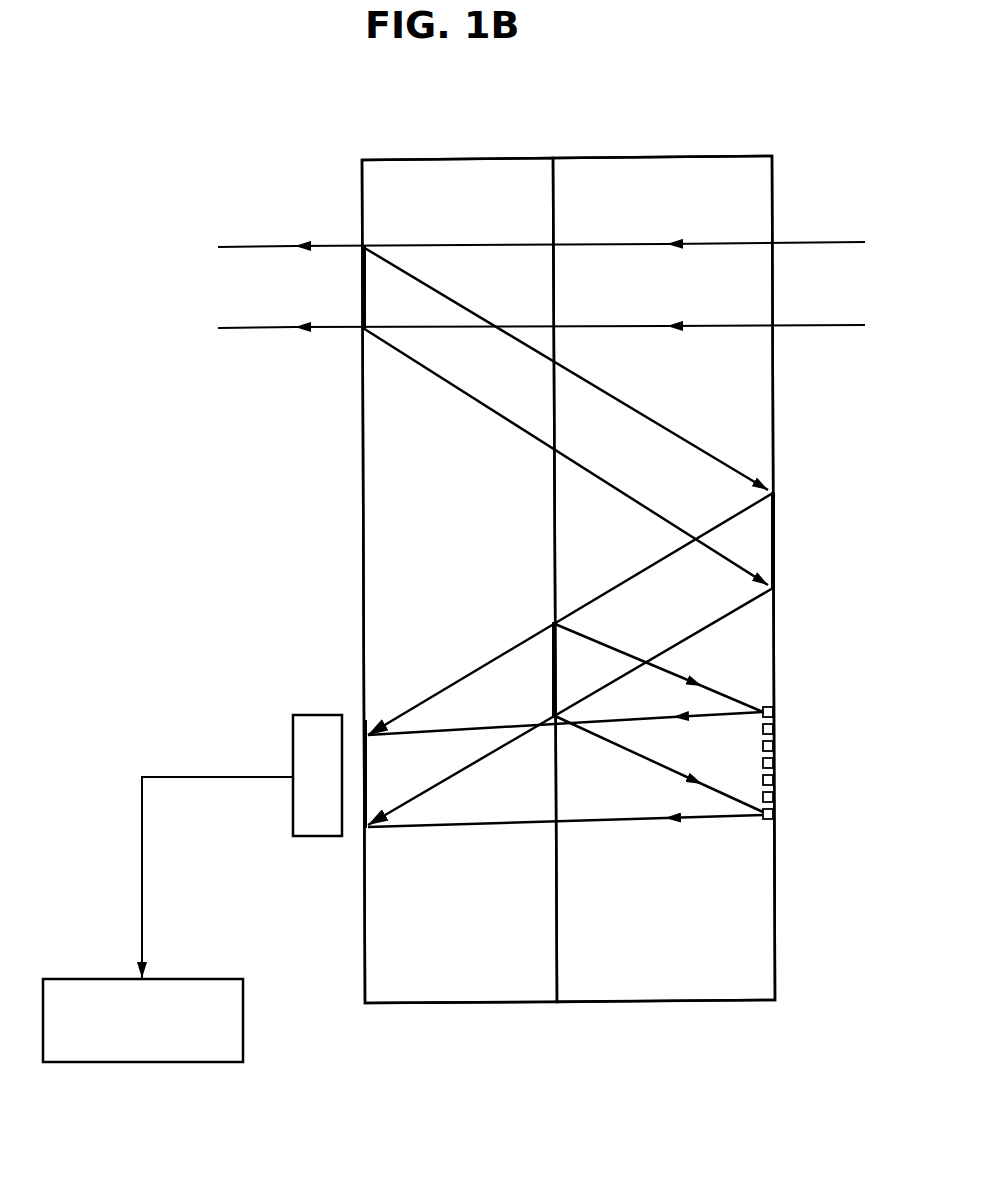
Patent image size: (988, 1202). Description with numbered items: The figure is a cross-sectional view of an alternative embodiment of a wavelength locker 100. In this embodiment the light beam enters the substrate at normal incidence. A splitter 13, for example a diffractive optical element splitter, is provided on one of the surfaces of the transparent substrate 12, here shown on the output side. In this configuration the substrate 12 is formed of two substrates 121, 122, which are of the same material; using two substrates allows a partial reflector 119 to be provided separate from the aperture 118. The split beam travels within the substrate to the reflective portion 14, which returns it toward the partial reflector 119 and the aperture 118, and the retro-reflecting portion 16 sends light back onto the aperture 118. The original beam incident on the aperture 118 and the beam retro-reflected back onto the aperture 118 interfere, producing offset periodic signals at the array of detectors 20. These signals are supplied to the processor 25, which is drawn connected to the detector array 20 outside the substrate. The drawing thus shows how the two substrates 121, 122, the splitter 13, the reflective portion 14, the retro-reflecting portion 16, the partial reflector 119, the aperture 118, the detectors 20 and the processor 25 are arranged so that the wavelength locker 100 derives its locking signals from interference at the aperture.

The wavelength locker 100 is at (648, 108).
The transparent substrate 12 is at (568, 547).
The first substrate 121 is at (455, 158).
The second substrate 122 is at (735, 155).
The splitter 13 is at (360, 289).
The reflective portion 14 is at (777, 503).
The retro-reflecting portion 16 is at (778, 745).
The partial reflector 119 is at (550, 645).
The aperture 118 is at (362, 815).
The array of detectors 20 is at (300, 735).
The processor 25 is at (243, 1013).